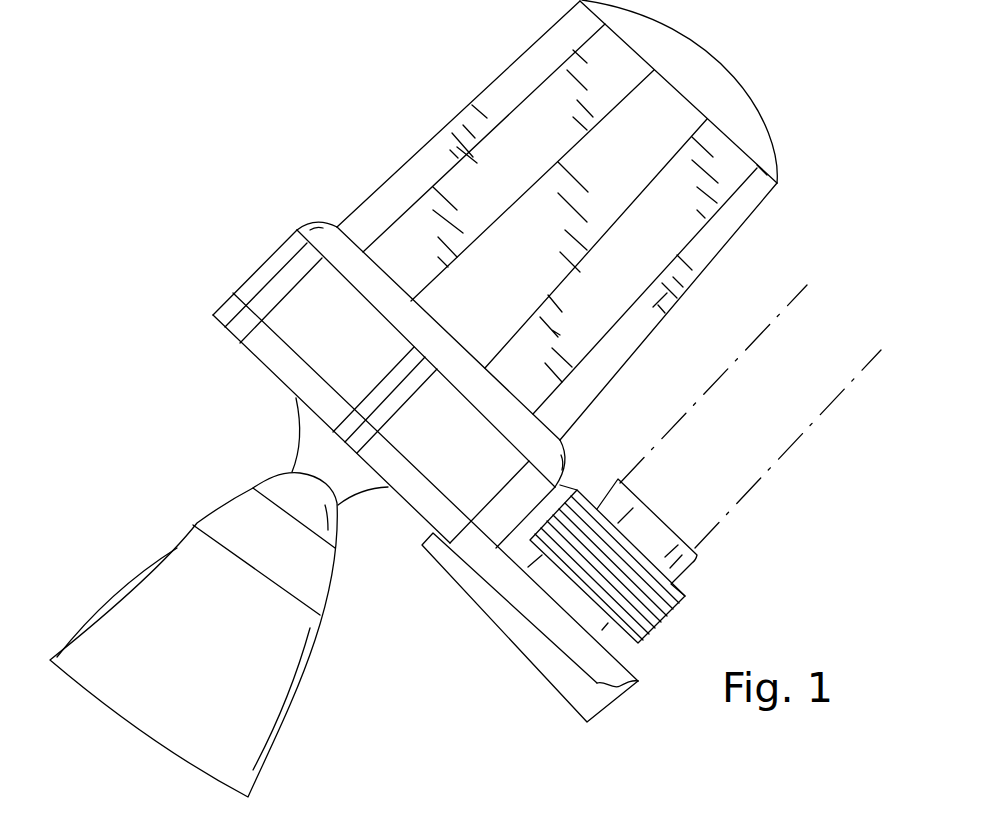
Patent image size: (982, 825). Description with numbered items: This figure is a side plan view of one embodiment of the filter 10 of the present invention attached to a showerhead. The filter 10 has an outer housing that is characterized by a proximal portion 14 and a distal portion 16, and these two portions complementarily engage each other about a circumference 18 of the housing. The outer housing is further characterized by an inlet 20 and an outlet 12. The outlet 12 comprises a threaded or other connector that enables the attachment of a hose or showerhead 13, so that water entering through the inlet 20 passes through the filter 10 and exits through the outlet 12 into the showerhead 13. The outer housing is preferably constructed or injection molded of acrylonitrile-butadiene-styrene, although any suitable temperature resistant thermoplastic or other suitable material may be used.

The filter 10 is at (362, 113).
The outlet 12 is at (347, 487).
The showerhead 13 is at (258, 723).
The proximal portion 14 is at (770, 138).
The distal portion 16 is at (240, 345).
The circumference 18 is at (235, 293).
The inlet 20 is at (723, 472).